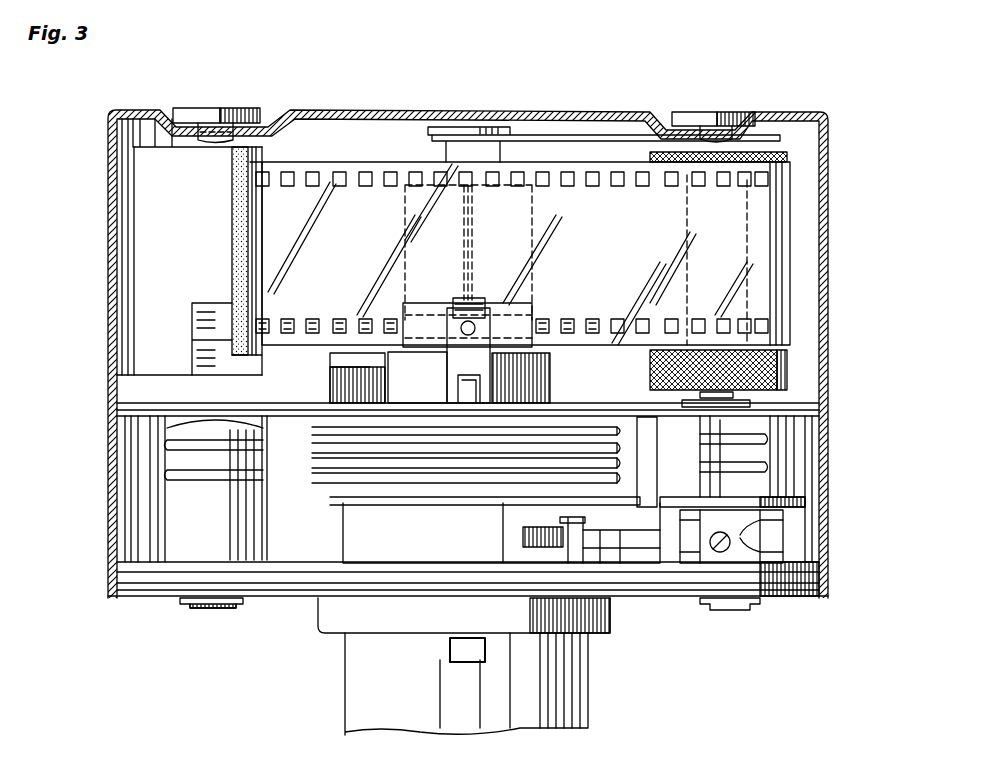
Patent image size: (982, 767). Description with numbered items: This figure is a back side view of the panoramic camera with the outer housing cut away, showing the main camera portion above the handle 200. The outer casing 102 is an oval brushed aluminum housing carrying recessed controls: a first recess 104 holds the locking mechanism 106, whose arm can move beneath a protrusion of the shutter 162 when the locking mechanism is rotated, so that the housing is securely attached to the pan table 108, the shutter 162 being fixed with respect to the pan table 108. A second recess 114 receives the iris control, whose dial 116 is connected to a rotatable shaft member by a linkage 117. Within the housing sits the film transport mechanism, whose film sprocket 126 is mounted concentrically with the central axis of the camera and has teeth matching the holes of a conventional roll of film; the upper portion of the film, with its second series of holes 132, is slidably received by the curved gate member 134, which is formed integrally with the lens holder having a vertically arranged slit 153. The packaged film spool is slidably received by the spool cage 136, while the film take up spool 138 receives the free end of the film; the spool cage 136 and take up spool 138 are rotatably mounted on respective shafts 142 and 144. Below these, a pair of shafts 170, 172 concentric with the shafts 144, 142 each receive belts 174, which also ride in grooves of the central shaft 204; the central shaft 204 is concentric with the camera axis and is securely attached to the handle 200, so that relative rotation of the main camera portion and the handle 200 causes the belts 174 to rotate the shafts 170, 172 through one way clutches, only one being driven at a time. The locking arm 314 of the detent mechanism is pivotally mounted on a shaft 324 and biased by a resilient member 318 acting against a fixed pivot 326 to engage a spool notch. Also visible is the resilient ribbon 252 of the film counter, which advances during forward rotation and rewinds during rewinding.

The outer casing 102 is at (824, 470).
The first recess 104 is at (752, 112).
The locking mechanism 106 is at (700, 115).
The pan table 108 is at (798, 600).
The second recess 114 is at (262, 107).
The dial 116 is at (212, 110).
The linkage 117 is at (335, 110).
The film sprocket 126 is at (556, 316).
The second series of holes 132 is at (622, 180).
The curved gate member 134 is at (552, 240).
The spool cage 136 is at (165, 225).
The film take up spool 138 is at (782, 366).
The shaft 142 is at (205, 609).
The shaft 144 is at (735, 612).
The vertically arranged slit 153 is at (455, 258).
The shutter 162 is at (474, 152).
The shaft 170 is at (760, 485).
The shaft 172 is at (192, 515).
The belts 174 is at (167, 475).
The handle 200 is at (335, 690).
The central shaft 204 is at (352, 488).
The resilient ribbon 252 is at (450, 652).
The locking arm 314 is at (690, 560).
The resilient member 318 is at (612, 535).
The shaft 324 is at (756, 405).
The fixed pivot 326 is at (583, 540).